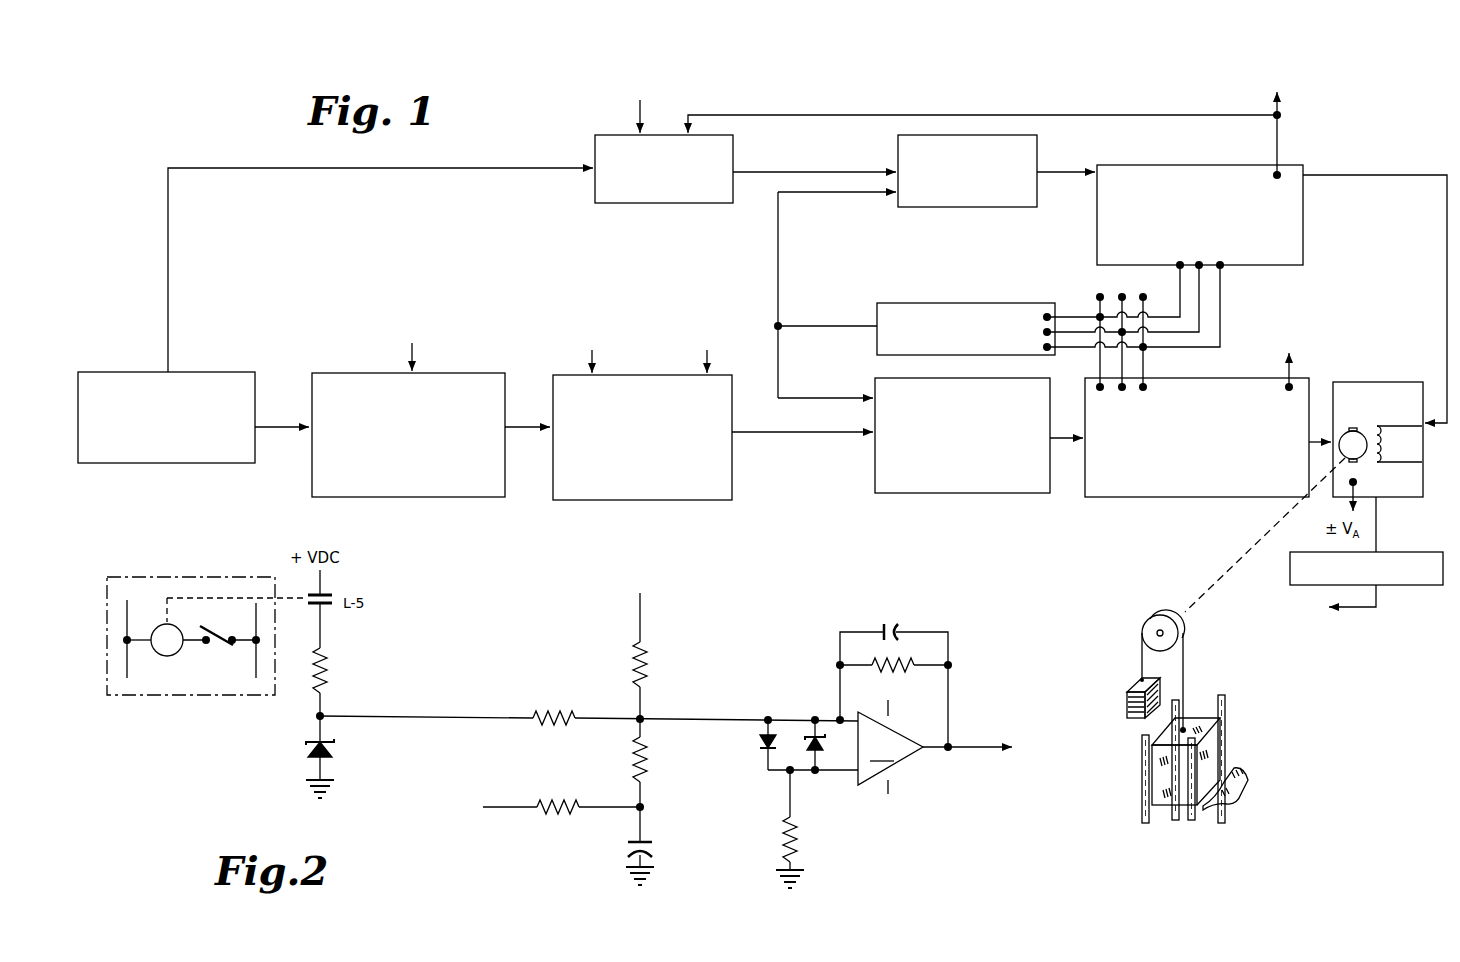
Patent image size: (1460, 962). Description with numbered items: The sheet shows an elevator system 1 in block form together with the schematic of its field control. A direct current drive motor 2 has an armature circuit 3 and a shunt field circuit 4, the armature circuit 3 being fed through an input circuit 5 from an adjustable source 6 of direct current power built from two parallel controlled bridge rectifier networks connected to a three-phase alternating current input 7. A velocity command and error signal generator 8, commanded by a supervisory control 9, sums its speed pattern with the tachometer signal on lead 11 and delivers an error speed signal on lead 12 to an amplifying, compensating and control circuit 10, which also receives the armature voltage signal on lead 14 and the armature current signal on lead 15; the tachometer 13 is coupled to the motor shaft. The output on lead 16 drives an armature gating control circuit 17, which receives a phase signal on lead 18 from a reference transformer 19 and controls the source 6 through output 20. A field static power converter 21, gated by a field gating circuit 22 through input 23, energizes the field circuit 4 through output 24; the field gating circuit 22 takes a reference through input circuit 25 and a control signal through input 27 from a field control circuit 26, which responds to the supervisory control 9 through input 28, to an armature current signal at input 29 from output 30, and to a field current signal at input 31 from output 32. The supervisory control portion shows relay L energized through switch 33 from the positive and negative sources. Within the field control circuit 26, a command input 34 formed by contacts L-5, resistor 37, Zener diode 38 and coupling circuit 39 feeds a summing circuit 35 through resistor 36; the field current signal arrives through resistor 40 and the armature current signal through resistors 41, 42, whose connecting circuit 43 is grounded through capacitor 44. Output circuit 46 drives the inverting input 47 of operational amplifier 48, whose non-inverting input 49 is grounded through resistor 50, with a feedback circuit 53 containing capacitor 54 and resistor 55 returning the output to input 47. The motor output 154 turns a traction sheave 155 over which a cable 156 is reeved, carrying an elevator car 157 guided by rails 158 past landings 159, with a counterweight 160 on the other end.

In FIG. 1, the elevator system 1 is at (268, 157).
In FIG. 1, the direct current drive motor 2 is at (1419, 396).
In FIG. 1, the armature circuit 3 is at (1362, 456).
In FIG. 1, the shunt field circuit 4 is at (1402, 464).
In FIG. 1, the input circuit 5 is at (1318, 432).
In FIG. 1, the adjustable source of direct current power 6 is at (1186, 498).
In FIG. 1, the three-phase alternating current input 7 is at (1076, 273).
In FIG. 1, the velocity command and error signal generator 8 is at (478, 498).
In FIG. 1, the supervisory control 9 is at (213, 464).
In FIG. 1, the amplifying, compensating and control circuit 10 is at (695, 501).
In FIG. 1, the lead 11 is at (414, 352).
In FIG. 1, the lead 12 is at (519, 430).
In FIG. 1, the tachometer 13 is at (1410, 587).
In FIG. 1, the lead 14 is at (594, 362).
In FIG. 1, the lead 15 is at (709, 362).
In FIG. 1, the lead 16 is at (821, 432).
In FIG. 1, the armature gating control circuit 17 is at (966, 494).
In FIG. 1, the lead 18 is at (835, 400).
In FIG. 1, the reference transformer 19 is at (877, 349).
In FIG. 1, the output 20 is at (1061, 433).
In FIG. 1, the field static power converter 21 is at (1290, 252).
In FIG. 1, the field gating circuit 22 is at (975, 208).
In FIG. 1, the input 23 is at (1068, 172).
In FIG. 1, the output 24 is at (1376, 178).
In FIG. 1, the input circuit 25 is at (828, 193).
In FIG. 1, the field control circuit 26 is at (657, 204).
In FIG. 2, the field control circuit 26 is at (987, 651).
In FIG. 1, the input 27 is at (847, 172).
In FIG. 2, the input 27 is at (968, 750).
In FIG. 1, the input 28 is at (447, 170).
In FIG. 1, the input 29 is at (639, 112).
In FIG. 2, the input 29 is at (507, 806).
In FIG. 1, the armature current output 30 is at (1288, 362).
In FIG. 1, the input 31 is at (752, 117).
In FIG. 2, the input 31 is at (642, 612).
In FIG. 1, the output 32 is at (1280, 141).
In FIG. 2, the relay switch contact 33 is at (216, 646).
In FIG. 2, the command input 34 is at (399, 668).
In FIG. 2, the summing circuit 35 is at (645, 716).
In FIG. 2, the resistor 36 is at (561, 716).
In FIG. 2, the resistor 37 is at (323, 657).
In FIG. 2, the Zener diode 38 is at (335, 749).
In FIG. 2, the coupling circuit 39 is at (323, 707).
In FIG. 2, the resistor 40 is at (644, 648).
In FIG. 2, the resistor 41 is at (577, 805).
In FIG. 2, the resistor 42 is at (646, 762).
In FIG. 2, the connecting circuit 43 is at (642, 790).
In FIG. 2, the capacitor 44 is at (648, 845).
In FIG. 2, the output circuit 46 is at (732, 718).
In FIG. 2, the inverting input 47 is at (829, 716).
In FIG. 2, the operational amplifier 48 is at (890, 749).
In FIG. 2, the non-inverting input 49 is at (837, 773).
In FIG. 2, the resistor 50 is at (800, 840).
In FIG. 2, the feedback circuit 53 is at (826, 648).
In FIG. 2, the capacitor 54 is at (887, 627).
In FIG. 2, the feedback resistor 55 is at (895, 661).
In FIG. 2, the rotatable output 154 is at (1259, 548).
In FIG. 2, the traction sheave 155 is at (1165, 615).
In FIG. 2, the cable 156 is at (1186, 667).
In FIG. 2, the elevator car 157 is at (1195, 713).
In FIG. 2, the rails 158 is at (1223, 841).
In FIG. 2, the landing 159 is at (1248, 771).
In FIG. 2, the counterweight 160 is at (1125, 703).